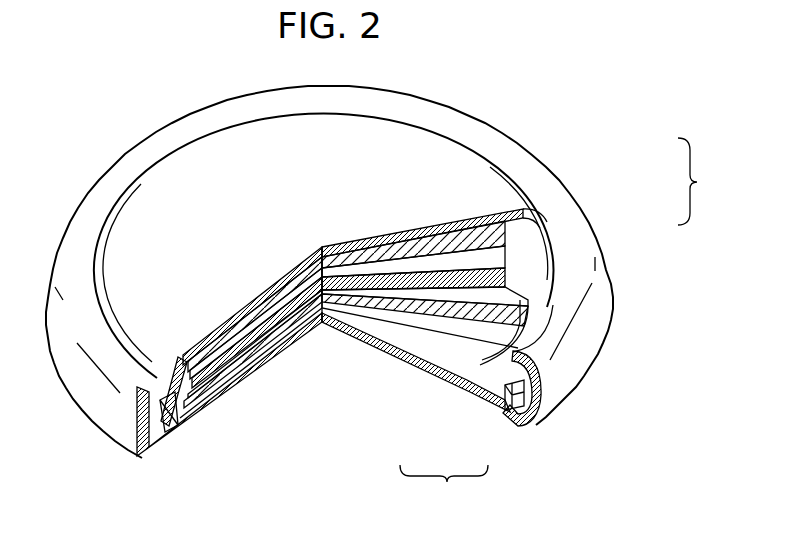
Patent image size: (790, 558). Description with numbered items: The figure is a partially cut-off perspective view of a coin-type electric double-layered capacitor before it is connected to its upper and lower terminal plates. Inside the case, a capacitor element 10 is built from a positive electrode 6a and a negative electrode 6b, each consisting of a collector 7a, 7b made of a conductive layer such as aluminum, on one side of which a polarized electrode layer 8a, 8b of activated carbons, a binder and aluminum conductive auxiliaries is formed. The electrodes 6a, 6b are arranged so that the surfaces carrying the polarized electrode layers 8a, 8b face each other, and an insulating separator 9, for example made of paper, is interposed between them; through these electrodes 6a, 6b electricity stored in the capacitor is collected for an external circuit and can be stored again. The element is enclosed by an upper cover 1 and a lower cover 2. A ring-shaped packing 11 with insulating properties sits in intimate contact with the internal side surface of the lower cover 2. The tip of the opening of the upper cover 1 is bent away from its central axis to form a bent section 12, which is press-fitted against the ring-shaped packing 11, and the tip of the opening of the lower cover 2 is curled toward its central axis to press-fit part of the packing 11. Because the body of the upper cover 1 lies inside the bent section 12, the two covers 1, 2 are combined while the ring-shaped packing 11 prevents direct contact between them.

The upper cover 1 is at (202, 158).
The lower cover 2 is at (232, 397).
The electrode (positive electrode) 6a is at (444, 491).
The electrode (negative electrode) 6b is at (701, 181).
The collector 7a is at (448, 358).
The collector 7b is at (490, 227).
The polarized electrode layer 8a is at (402, 310).
The polarized electrode layer 8b is at (495, 260).
The separator 9 is at (510, 295).
The capacitor element 10 is at (313, 340).
The ring-shaped packing 11 is at (522, 407).
The bent section 12 is at (173, 397).